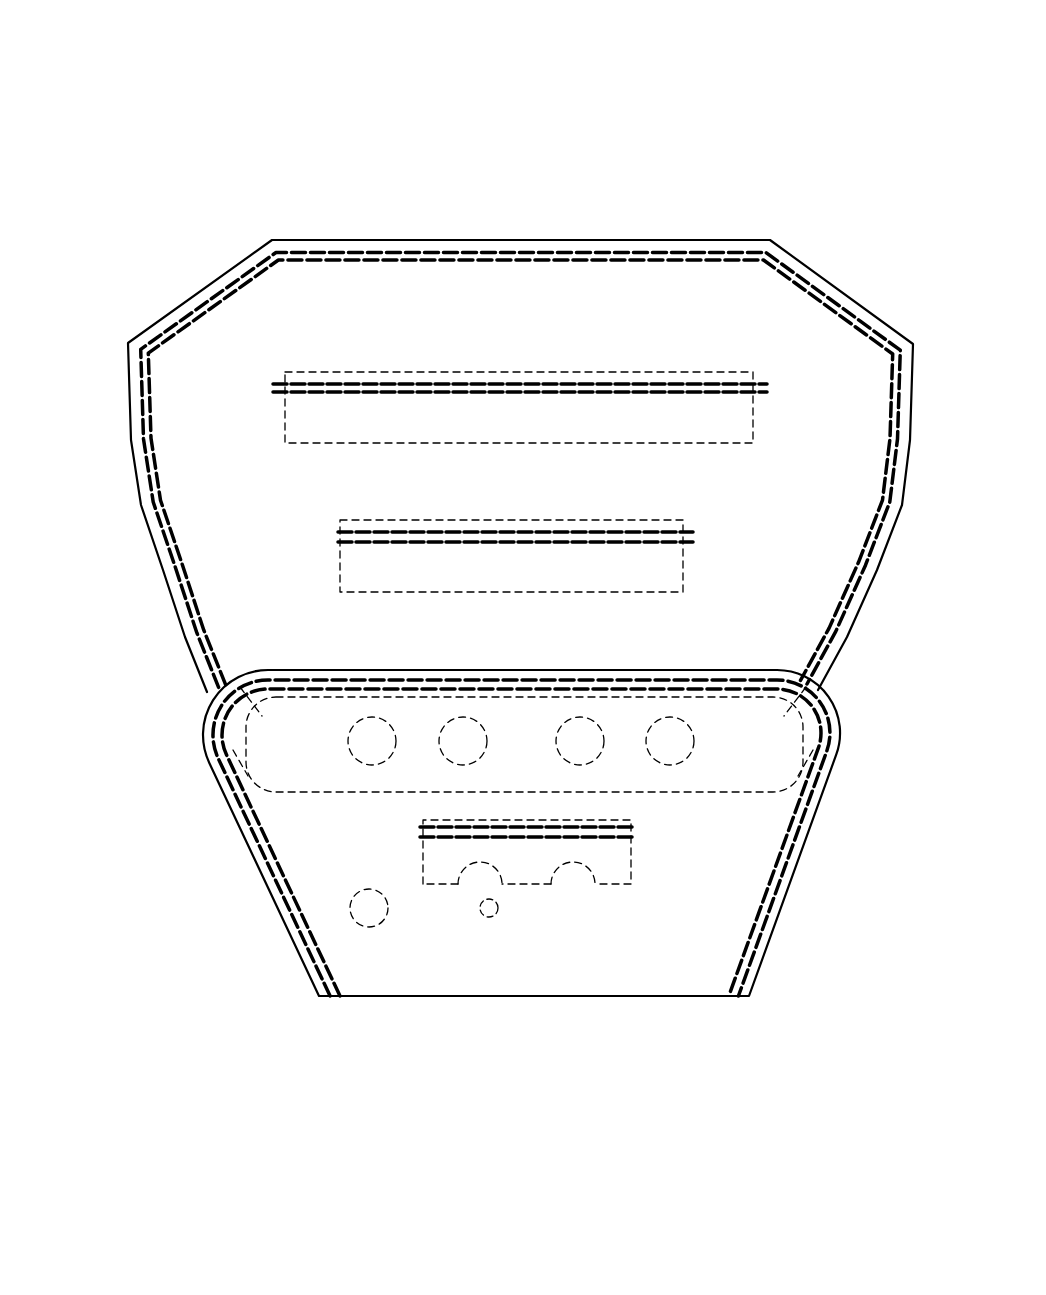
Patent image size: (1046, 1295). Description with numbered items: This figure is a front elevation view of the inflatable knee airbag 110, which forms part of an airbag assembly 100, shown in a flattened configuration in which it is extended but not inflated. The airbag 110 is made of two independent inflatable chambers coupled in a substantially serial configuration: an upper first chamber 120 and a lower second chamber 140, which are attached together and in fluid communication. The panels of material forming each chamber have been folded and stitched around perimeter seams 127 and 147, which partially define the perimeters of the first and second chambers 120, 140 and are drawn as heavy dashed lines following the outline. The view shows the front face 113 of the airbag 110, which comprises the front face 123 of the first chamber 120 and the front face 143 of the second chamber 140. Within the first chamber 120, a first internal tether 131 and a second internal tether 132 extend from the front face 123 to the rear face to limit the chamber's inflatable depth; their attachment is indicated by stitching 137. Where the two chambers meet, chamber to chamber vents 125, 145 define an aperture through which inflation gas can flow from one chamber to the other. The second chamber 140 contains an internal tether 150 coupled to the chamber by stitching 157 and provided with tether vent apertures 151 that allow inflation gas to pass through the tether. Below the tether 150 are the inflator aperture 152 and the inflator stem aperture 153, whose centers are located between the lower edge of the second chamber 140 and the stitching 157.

The airbag assembly 100 is at (607, 104).
The inflatable knee airbag 110 is at (692, 204).
The first chamber 120 is at (772, 308).
The perimeter seam 127 is at (172, 337).
The second internal tether 132 is at (425, 418).
The first internal tether 131 is at (500, 567).
The port contacts 137 is at (310, 383).
The front face 113 is at (533, 681).
The front face of first chamber 123 is at (818, 501).
The front face of second chamber 143 is at (700, 936).
The second chamber 140 is at (766, 832).
The perimeter seam 147 is at (270, 878).
The chamber to chamber vent 125 is at (521, 688).
The chamber to chamber vent 145 is at (666, 737).
The internal tether 150 is at (613, 865).
The stitching 157 is at (440, 836).
The tether vent apertures 151 is at (571, 868).
The inflator aperture 152 is at (372, 912).
The inflator stem aperture 153 is at (489, 912).